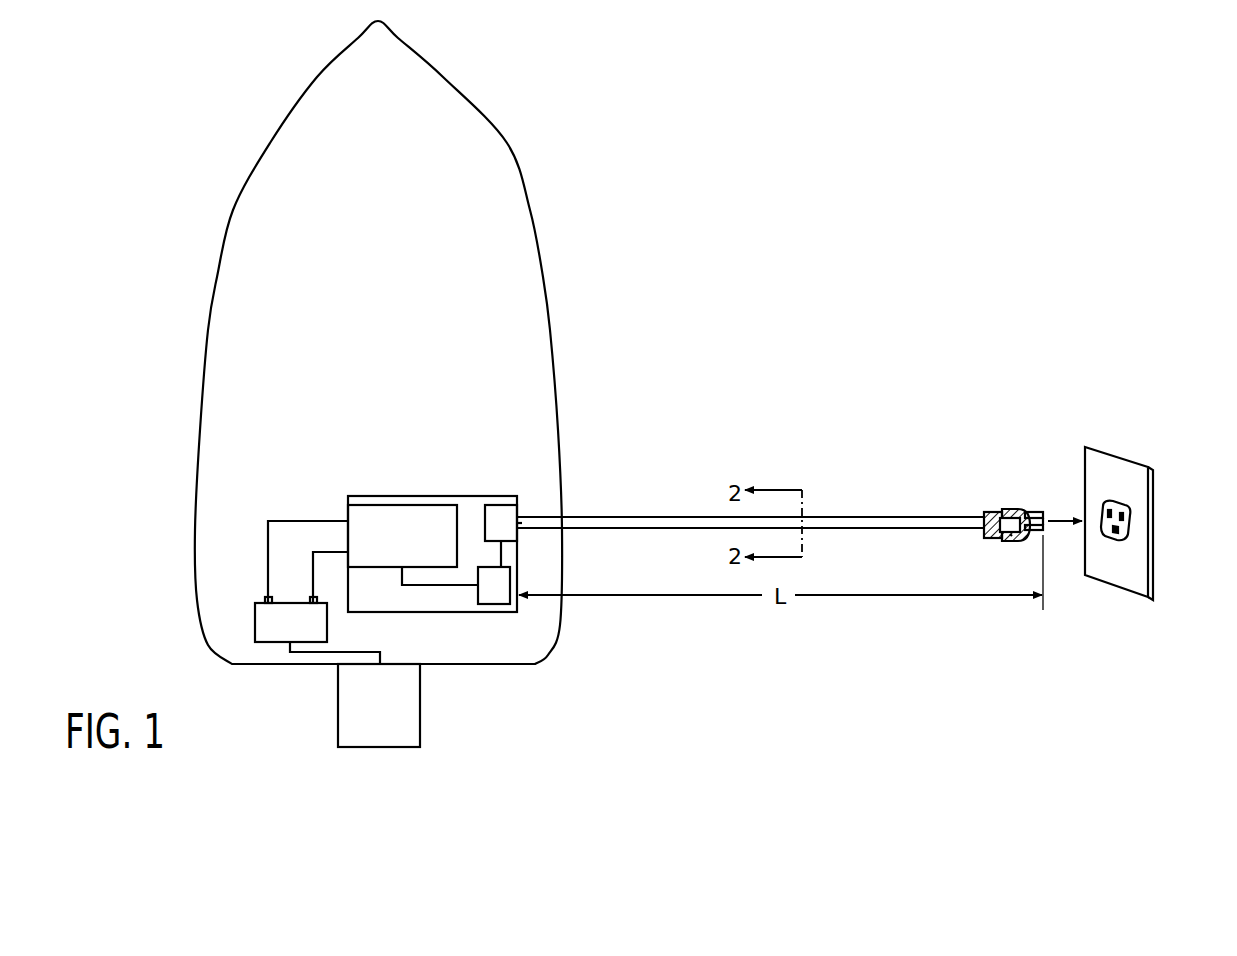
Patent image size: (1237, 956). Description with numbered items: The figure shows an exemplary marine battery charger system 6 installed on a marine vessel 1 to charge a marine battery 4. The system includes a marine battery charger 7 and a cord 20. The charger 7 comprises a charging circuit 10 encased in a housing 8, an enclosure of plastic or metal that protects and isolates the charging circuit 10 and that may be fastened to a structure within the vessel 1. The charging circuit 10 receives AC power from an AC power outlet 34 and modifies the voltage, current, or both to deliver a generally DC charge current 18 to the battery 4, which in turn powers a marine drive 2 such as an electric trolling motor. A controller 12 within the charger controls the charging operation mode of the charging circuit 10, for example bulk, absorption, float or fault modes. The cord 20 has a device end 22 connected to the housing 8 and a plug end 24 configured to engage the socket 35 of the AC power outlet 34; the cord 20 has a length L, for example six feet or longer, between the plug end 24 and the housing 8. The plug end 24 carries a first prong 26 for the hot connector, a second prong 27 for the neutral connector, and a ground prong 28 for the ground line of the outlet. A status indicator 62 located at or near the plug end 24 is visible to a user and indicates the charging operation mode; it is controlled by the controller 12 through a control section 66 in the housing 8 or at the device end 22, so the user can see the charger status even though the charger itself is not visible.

The marine vessel 1 is at (506, 146).
The marine drive 2 is at (420, 703).
The marine battery 4 is at (255, 622).
The marine battery charger system 6 is at (797, 256).
The marine battery charger 7 is at (598, 437).
The housing 8 is at (474, 496).
The charging circuit 10 is at (403, 505).
The controller 12 is at (495, 604).
The charge current 18 is at (327, 512).
The cord 20 is at (650, 522).
The device end 22 is at (518, 530).
The plug end 24 is at (996, 512).
The first prong 26 is at (1036, 512).
The second prong 27 is at (1046, 526).
The ground prong 28 is at (1030, 530).
The AC power outlet 34 is at (1117, 488).
The socket 35 is at (1127, 522).
The status indicator 62 is at (1010, 536).
The control section 66 is at (508, 512).